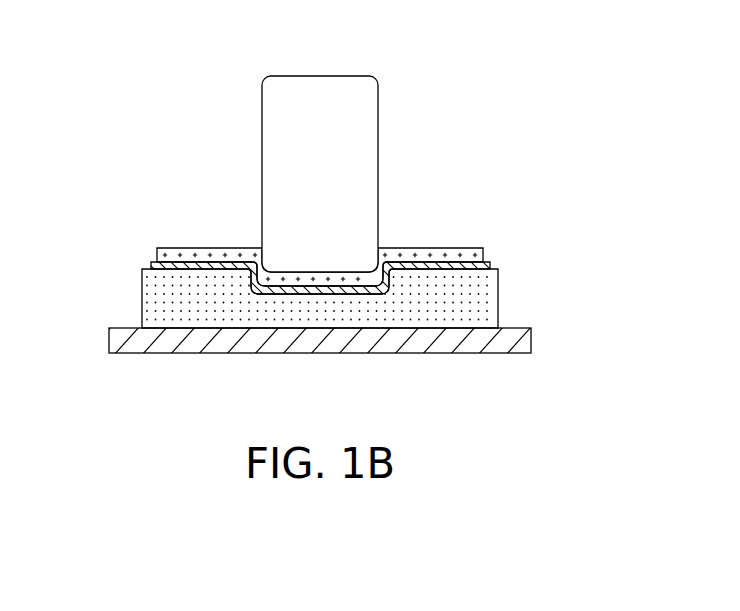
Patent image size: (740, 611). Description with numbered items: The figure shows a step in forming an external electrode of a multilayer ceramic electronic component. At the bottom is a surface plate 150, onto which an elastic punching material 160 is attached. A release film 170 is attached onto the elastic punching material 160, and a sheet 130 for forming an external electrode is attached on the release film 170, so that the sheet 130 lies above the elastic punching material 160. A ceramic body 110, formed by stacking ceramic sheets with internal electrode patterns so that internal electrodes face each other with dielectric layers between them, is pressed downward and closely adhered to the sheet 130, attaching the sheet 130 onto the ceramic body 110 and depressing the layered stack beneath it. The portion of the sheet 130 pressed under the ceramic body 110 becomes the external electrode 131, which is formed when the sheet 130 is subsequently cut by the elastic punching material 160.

The ceramic body 110 is at (321, 92).
The sheet for forming an external electrode 130 is at (453, 250).
The external electrode 131 is at (322, 280).
The surface plate 150 is at (517, 337).
The elastic punching material 160 is at (490, 302).
The release film 170 is at (483, 266).